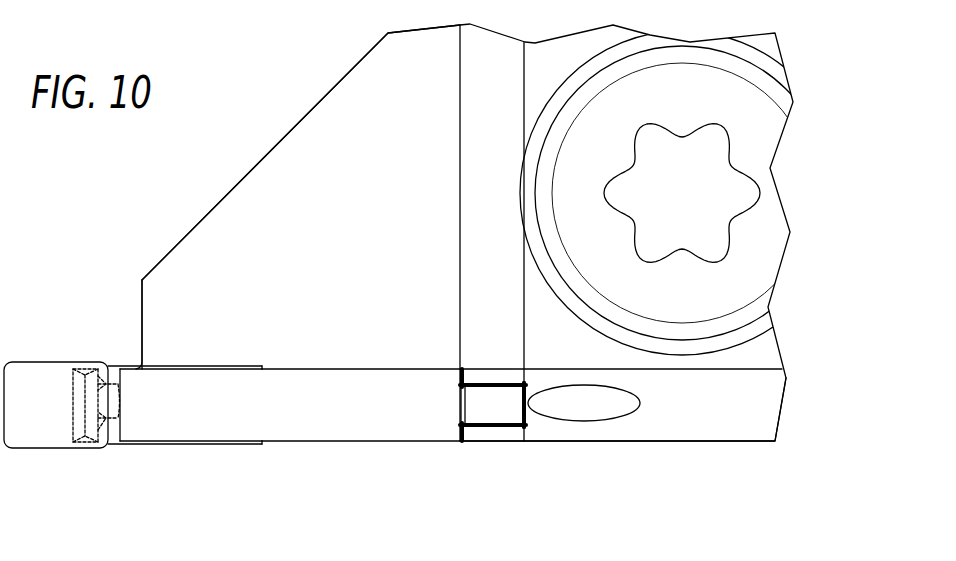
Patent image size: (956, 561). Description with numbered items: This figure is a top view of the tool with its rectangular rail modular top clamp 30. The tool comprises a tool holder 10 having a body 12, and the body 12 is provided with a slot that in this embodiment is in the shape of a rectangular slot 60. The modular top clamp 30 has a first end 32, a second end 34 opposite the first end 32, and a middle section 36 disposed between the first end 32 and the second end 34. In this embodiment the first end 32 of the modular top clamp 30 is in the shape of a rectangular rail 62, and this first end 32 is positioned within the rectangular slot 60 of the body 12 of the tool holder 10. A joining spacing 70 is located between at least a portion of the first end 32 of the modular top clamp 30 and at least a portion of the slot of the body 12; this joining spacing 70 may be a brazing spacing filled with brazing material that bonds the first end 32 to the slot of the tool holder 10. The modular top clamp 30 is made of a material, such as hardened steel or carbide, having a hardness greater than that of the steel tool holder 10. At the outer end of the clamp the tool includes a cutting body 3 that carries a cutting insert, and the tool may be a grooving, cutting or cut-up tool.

The tool holder 10 is at (790, 399).
The body 12 is at (706, 452).
The modular top clamp 30 is at (302, 346).
The cutting body 3 is at (31, 458).
The second end 34 is at (127, 447).
The middle section 36 is at (284, 447).
The first end 32 is at (497, 368).
The rectangular rail 62 is at (499, 407).
The joining spacing 70 is at (530, 422).
The rectangular slot 60 is at (535, 381).